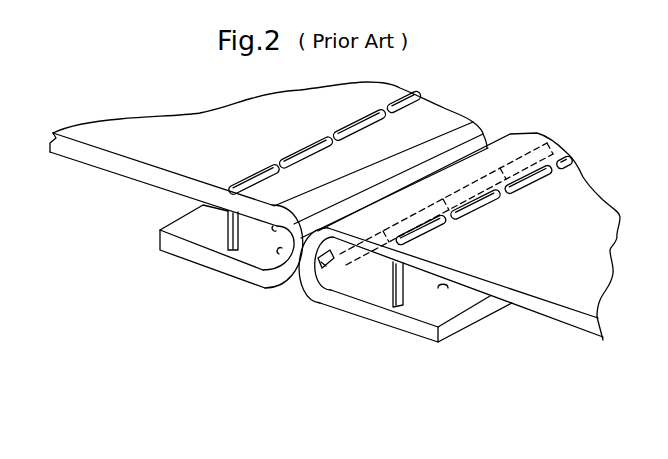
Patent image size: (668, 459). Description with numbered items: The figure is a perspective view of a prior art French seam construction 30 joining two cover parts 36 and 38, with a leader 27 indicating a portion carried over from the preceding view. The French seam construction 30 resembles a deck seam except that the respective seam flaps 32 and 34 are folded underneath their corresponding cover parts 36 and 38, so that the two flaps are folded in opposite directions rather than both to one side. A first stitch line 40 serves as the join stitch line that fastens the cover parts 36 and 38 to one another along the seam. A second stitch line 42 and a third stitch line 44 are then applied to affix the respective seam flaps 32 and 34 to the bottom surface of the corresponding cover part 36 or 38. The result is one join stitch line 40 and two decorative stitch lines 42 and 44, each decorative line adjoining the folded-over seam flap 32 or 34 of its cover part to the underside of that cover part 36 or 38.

The hinge region (referenced from other figure) 27 is at (0, 0).
The French seam construction 30 is at (282, 325).
The seam flap 32 is at (187, 250).
The seam flap 34 is at (431, 340).
The cover part 36 is at (80, 156).
The cover part 38 is at (581, 328).
The first stitch line 40 is at (331, 270).
The second stitch line 42 is at (405, 90).
The third stitch line 44 is at (567, 158).